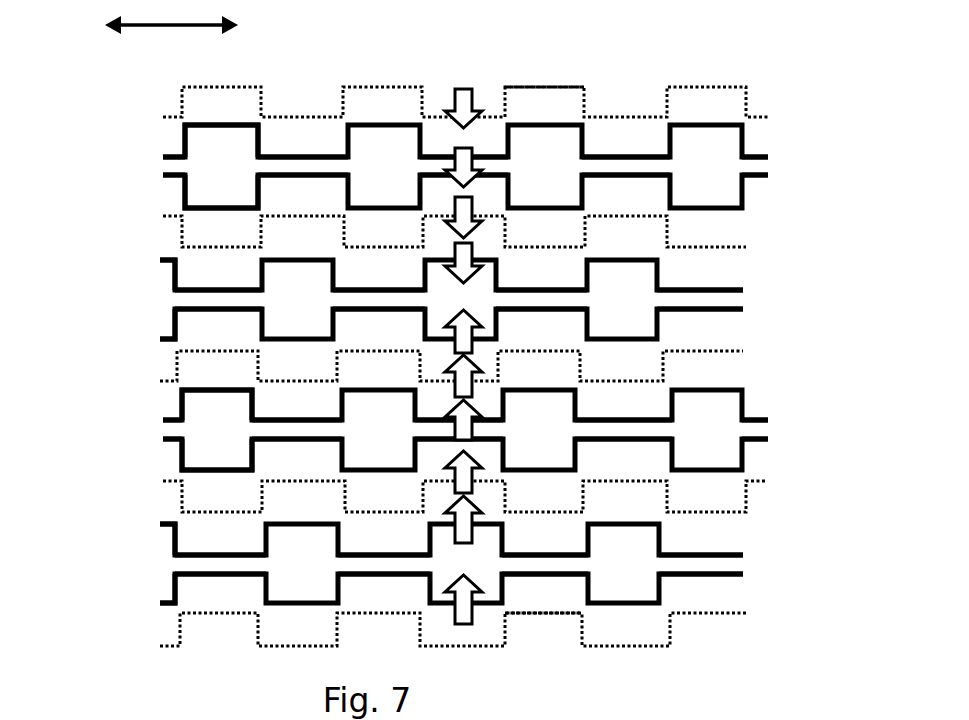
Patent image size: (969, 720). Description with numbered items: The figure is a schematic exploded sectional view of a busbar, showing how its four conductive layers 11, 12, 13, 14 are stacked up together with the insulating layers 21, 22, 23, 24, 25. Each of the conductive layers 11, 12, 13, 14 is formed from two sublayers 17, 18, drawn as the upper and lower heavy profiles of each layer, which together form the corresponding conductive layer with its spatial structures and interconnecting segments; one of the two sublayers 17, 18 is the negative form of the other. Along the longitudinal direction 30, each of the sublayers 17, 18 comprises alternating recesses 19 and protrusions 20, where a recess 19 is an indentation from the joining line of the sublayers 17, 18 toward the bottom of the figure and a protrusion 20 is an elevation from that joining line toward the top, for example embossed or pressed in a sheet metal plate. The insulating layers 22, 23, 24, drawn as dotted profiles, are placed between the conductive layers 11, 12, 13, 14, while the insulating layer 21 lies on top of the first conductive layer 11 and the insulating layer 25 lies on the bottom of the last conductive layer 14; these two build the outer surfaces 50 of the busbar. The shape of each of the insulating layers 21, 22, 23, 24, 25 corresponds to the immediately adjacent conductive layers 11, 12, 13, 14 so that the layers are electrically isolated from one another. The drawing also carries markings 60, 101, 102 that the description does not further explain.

The first conductive layer 11 is at (880, 140).
The conductive layer 12 is at (853, 272).
The conductive layer 13 is at (878, 402).
The conductive layer 14 is at (856, 539).
The sublayer 17 is at (772, 157).
The sublayer 18 is at (772, 175).
The recess 19 is at (213, 185).
The protrusion 20 is at (212, 140).
The insulating layer 21 is at (757, 108).
The insulating layer 22 is at (757, 243).
The insulating layer 23 is at (748, 350).
The insulating layer 24 is at (773, 485).
The insulating layer 25 is at (748, 614).
The longitudinal direction 30 is at (171, 41).
The outer surface 50 is at (541, 86).
The box interior region 60 is at (705, 150).
The first side 101 is at (102, 153).
The second side 102 is at (803, 616).